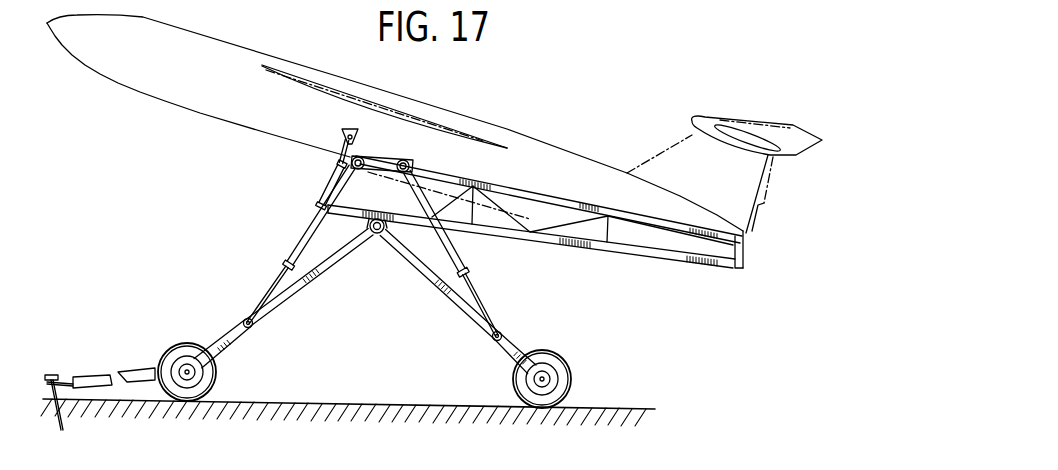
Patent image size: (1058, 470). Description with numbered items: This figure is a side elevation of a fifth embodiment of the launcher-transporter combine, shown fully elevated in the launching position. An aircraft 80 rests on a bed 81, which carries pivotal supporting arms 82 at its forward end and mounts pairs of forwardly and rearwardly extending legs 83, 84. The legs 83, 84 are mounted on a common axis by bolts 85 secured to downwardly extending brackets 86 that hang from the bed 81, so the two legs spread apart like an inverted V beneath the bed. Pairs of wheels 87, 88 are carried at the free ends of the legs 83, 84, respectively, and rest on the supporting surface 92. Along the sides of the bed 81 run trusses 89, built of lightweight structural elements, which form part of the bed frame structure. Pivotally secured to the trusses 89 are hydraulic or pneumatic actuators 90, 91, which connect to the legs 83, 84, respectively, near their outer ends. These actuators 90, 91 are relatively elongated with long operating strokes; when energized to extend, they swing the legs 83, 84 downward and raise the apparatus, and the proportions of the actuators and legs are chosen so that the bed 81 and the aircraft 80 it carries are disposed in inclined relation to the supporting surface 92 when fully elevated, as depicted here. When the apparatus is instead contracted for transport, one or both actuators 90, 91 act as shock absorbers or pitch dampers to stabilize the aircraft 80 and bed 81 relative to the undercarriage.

The aircraft 80 is at (522, 133).
The bed 81 is at (587, 244).
The pivotal supporting arms 82 is at (340, 176).
The forwardly extending legs 83 is at (283, 300).
The rearwardly extending legs 84 is at (460, 302).
The bolts 85 is at (378, 234).
The downwardly extending brackets 86 is at (371, 220).
The wheels 87 is at (212, 372).
The wheels 88 is at (566, 383).
The trusses 89 is at (387, 159).
The hydraulic or pneumatic actuator 90 is at (307, 240).
The hydraulic or pneumatic actuator 91 is at (463, 262).
The supporting surface 92 is at (385, 409).